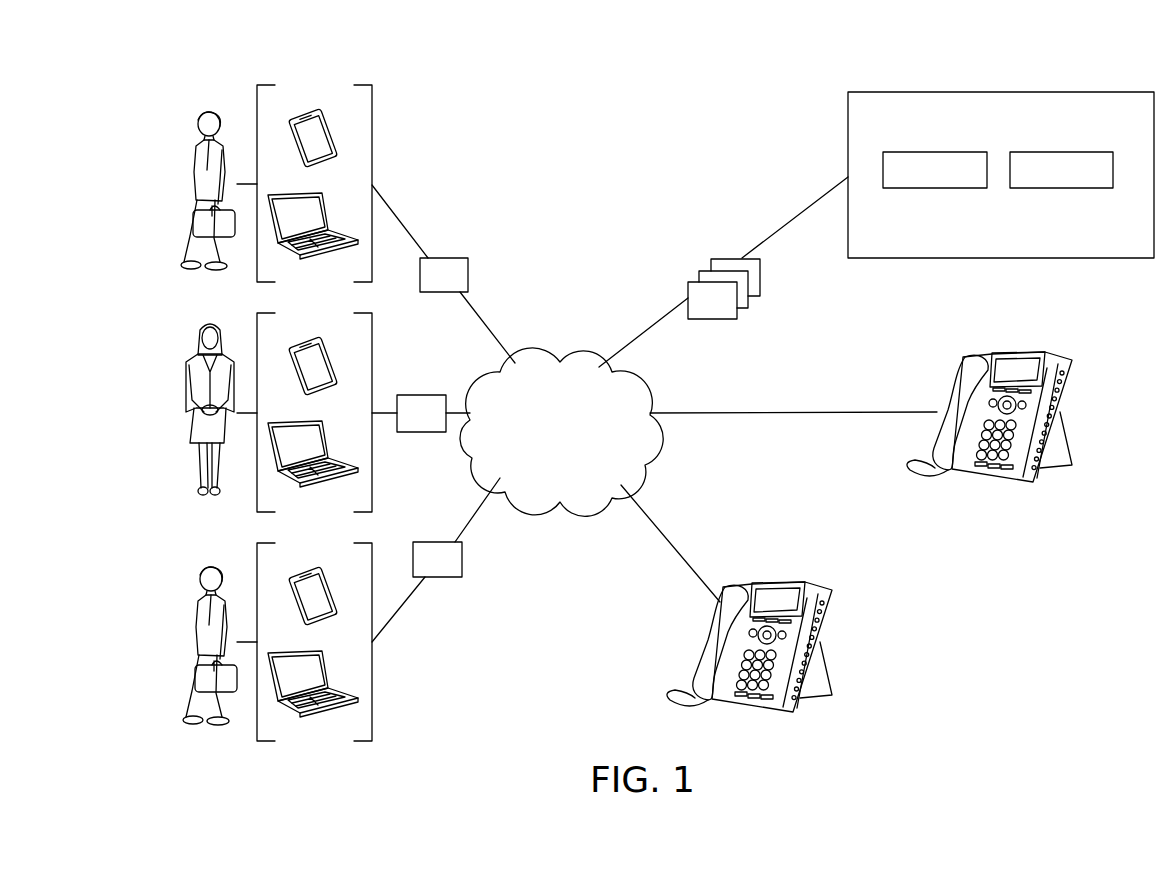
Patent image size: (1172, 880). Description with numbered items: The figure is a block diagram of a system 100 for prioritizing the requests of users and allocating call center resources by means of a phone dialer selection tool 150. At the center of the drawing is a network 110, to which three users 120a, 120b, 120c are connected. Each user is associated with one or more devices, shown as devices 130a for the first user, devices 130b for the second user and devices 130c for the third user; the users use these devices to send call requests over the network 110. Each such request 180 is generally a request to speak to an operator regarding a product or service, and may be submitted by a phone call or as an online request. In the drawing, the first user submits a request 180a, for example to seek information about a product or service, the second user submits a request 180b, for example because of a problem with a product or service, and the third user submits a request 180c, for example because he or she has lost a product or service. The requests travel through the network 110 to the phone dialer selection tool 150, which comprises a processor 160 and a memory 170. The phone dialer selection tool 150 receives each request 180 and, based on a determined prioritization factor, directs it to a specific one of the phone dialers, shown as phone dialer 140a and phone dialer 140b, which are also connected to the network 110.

The system 100 is at (1000, 618).
The network 110 is at (597, 366).
The user 120a is at (205, 112).
The user 120b is at (202, 330).
The user 120c is at (210, 567).
The devices 130a is at (372, 118).
The devices 130b is at (372, 346).
The devices 130c is at (372, 576).
The phone dialer 140a is at (822, 648).
The phone dialer 140b is at (1062, 418).
The phone dialer selection tool 150 is at (956, 175).
The processor 160 is at (935, 190).
The memory 170 is at (1062, 190).
The request 180 is at (675, 302).
The request 180a is at (457, 258).
The request 180b is at (433, 395).
The request 180c is at (462, 556).